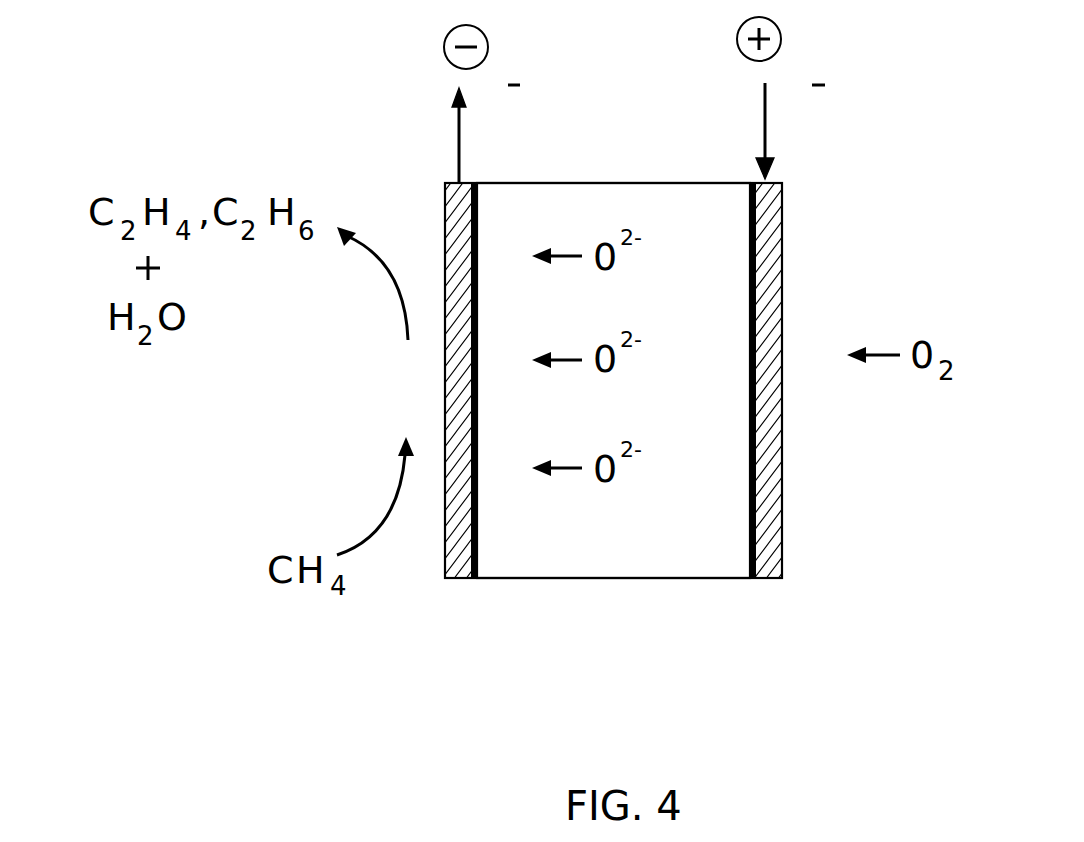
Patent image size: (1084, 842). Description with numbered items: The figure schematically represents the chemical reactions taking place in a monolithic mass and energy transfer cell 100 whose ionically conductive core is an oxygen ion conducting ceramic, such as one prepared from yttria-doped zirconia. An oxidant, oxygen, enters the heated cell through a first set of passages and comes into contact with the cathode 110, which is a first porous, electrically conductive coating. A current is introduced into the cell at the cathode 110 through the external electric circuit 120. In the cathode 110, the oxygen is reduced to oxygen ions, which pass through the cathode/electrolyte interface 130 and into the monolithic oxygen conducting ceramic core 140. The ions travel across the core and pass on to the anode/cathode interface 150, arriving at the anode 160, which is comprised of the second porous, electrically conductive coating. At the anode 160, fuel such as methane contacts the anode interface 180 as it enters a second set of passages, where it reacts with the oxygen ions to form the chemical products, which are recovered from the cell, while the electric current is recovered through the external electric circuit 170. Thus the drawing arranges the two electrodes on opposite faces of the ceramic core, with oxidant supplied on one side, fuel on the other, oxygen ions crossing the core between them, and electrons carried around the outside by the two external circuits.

The monolithic mass and energy transfer cell 100 is at (657, 688).
The cathode 110 is at (773, 497).
The external electric circuit 120 is at (767, 128).
The cathode/electrolyte interface 130 is at (750, 555).
The monolithic oxygen conducting ceramic core 140 is at (645, 577).
The anode/cathode interface 150 is at (477, 560).
The anode 160 is at (481, 195).
The external electric circuit 170 is at (457, 137).
The anode interface 180 is at (453, 237).